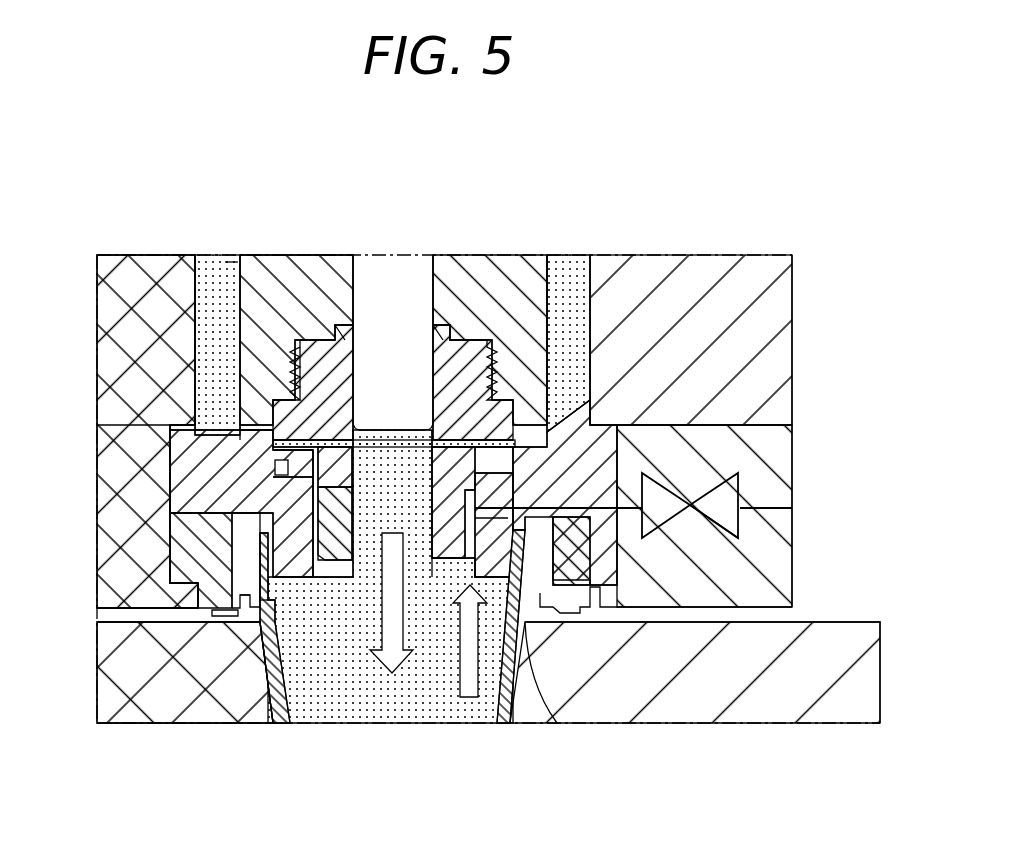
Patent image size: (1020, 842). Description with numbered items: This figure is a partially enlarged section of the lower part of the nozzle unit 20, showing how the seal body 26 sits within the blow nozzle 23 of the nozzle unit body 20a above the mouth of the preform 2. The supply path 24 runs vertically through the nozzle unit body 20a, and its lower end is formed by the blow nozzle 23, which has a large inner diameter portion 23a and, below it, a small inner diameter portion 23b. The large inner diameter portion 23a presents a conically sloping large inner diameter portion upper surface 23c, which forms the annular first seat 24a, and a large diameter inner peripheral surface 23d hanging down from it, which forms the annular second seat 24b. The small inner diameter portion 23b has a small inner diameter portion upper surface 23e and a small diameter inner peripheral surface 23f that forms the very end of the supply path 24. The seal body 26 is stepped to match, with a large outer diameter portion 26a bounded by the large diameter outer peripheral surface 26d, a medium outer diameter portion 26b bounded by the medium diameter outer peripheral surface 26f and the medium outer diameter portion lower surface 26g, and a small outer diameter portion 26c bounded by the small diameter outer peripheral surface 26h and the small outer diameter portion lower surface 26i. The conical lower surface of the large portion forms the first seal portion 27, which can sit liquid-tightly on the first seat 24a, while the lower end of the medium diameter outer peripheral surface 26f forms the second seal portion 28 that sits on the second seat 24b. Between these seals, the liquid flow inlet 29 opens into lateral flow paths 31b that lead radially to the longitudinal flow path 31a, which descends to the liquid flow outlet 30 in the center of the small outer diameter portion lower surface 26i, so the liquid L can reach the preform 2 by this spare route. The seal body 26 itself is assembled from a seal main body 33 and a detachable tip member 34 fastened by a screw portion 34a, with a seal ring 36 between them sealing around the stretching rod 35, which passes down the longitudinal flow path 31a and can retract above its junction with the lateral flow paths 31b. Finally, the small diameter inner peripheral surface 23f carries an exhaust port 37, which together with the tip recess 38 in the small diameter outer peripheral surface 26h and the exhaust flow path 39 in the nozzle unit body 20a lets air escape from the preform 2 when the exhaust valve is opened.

The nozzle unit 20 is at (836, 262).
The nozzle unit body 20a is at (793, 290).
The blow nozzle 23 is at (580, 488).
The large inner diameter portion 23a is at (588, 440).
The small inner diameter portion 23b is at (481, 471).
The large inner diameter portion upper surface 23c is at (590, 356).
The large diameter inner peripheral surface 23d is at (488, 432).
The small inner diameter portion upper surface 23e is at (593, 503).
The small diameter inner peripheral surface 23f is at (436, 530).
The supply path 24 is at (580, 393).
The first seat 24a is at (560, 330).
The second seat 24b is at (462, 440).
The seal body 26 is at (215, 280).
The large outer diameter portion 26a is at (280, 464).
The medium outer diameter portion 26b is at (303, 488).
The small outer diameter portion 26c is at (262, 633).
The large diameter outer peripheral surface 26d is at (237, 322).
The medium diameter outer peripheral surface 26f is at (280, 460).
The medium outer diameter portion lower surface 26g is at (292, 520).
The small diameter outer peripheral surface 26h is at (236, 606).
The small outer diameter portion lower surface 26i is at (290, 615).
The first seal portion 27 is at (250, 425).
The second seal portion 28 is at (300, 470).
The liquid flow inlet 29 is at (560, 470).
The liquid flow outlet 30 is at (385, 590).
The longitudinal flow path 31a is at (297, 565).
The lateral flow paths 31b is at (84, 312).
The seal main body 33 is at (283, 290).
The tip member 34 is at (343, 377).
The screw portion 34a is at (236, 270).
The stretching rod 35 is at (373, 272).
The seal ring 36 is at (295, 395).
The exhaust port 37 is at (437, 520).
The tip recess 38 is at (513, 470).
The exhaust flow path 39 is at (760, 505).
The preform 2 is at (519, 706).
The liquid L is at (378, 707).